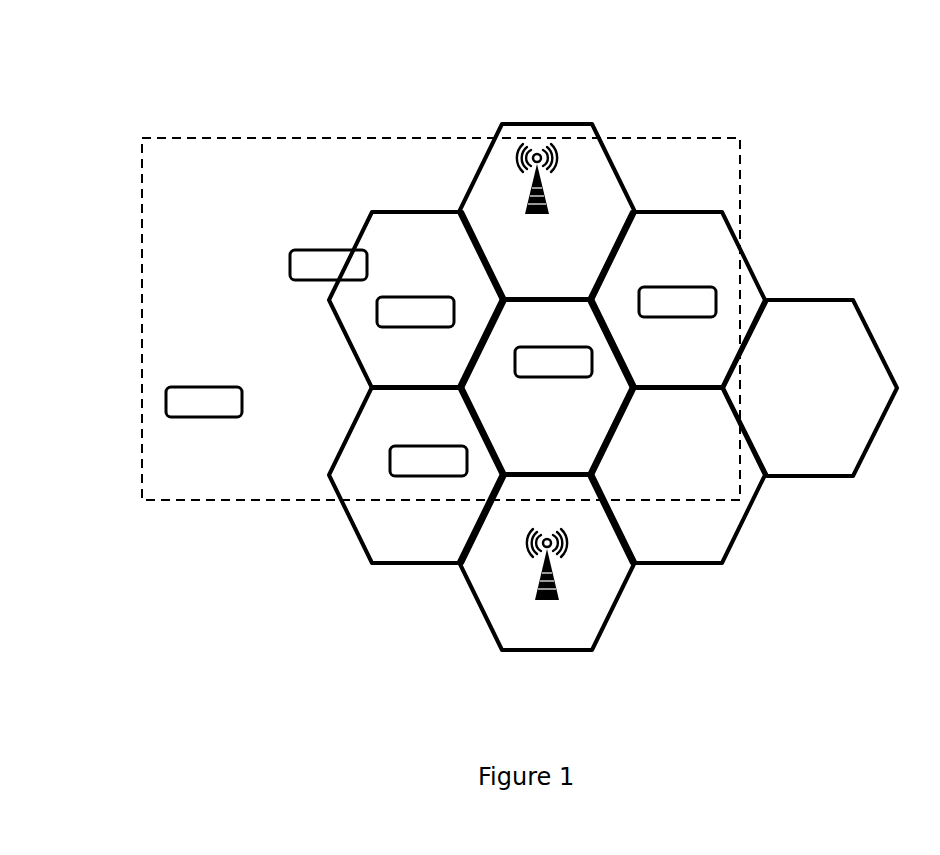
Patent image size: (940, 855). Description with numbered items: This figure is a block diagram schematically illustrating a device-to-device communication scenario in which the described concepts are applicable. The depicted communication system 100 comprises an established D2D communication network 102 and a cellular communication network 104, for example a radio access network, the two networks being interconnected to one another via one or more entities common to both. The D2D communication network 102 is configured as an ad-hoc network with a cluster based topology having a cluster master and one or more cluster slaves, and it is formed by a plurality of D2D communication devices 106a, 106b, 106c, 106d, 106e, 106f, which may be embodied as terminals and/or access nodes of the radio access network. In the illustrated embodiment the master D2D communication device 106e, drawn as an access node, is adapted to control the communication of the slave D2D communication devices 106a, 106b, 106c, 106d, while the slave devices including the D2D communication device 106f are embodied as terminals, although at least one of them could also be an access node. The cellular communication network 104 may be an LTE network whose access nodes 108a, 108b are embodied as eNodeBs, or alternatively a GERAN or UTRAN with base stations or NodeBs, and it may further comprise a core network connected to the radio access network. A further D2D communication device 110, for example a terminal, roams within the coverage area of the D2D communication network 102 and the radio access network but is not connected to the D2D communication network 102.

The communication system 100 is at (532, 80).
The D2D communication network 102 is at (205, 135).
The cellular communication network 104 is at (866, 290).
The D2D communication device 106a is at (318, 250).
The D2D communication device 106b is at (381, 320).
The D2D communication device 106c is at (393, 476).
The D2D communication device 106d is at (548, 377).
The master D2D communication device 106e is at (540, 132).
The D2D communication device 106f is at (712, 288).
The access node 108a is at (521, 148).
The access node 108b is at (563, 601).
The further D2D communication device 110 is at (166, 398).